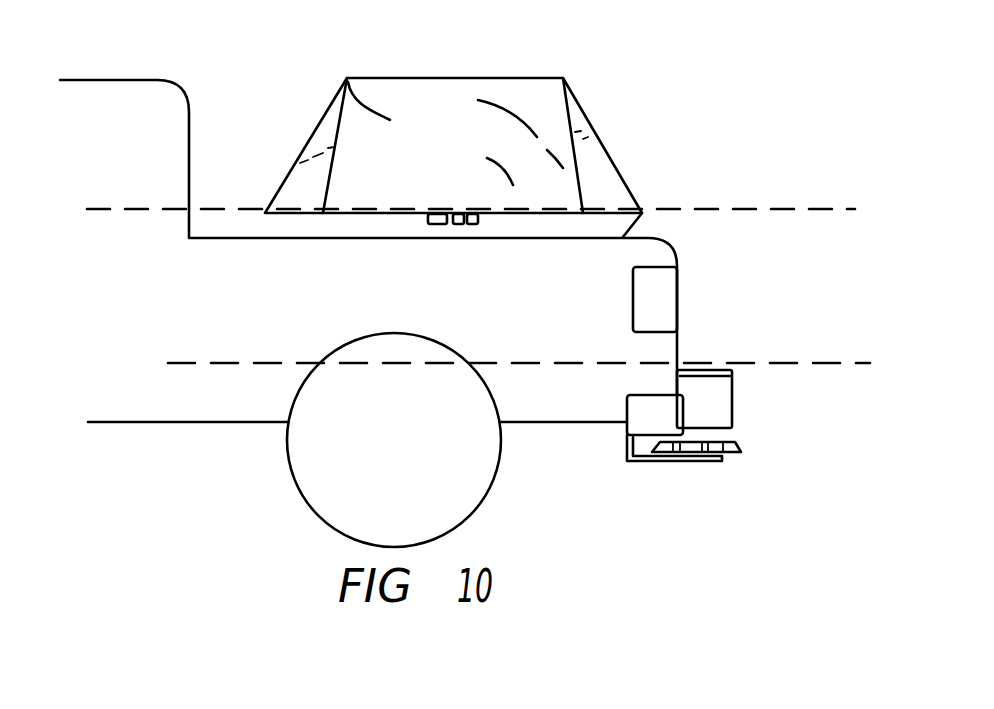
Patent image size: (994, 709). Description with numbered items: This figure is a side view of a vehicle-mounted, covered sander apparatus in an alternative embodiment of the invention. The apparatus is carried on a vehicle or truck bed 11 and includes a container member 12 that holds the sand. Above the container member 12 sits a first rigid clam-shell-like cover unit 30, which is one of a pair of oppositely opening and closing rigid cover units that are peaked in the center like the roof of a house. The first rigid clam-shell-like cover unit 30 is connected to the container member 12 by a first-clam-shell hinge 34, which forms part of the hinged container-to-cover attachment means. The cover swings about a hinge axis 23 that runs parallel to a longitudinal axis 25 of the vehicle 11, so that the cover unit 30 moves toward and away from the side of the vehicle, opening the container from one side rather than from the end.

The vehicle or truck bed 11 is at (597, 313).
The container member 12 is at (277, 215).
The hinge axis 23 is at (763, 210).
The longitudinal axis 25 is at (825, 363).
The first rigid clam-shell-like cover unit 30 is at (347, 80).
The first-clam-shell hinge 34 is at (443, 225).